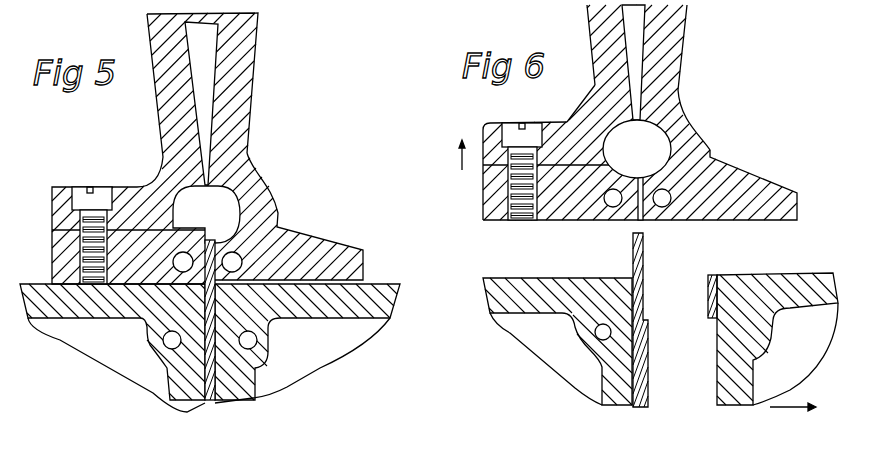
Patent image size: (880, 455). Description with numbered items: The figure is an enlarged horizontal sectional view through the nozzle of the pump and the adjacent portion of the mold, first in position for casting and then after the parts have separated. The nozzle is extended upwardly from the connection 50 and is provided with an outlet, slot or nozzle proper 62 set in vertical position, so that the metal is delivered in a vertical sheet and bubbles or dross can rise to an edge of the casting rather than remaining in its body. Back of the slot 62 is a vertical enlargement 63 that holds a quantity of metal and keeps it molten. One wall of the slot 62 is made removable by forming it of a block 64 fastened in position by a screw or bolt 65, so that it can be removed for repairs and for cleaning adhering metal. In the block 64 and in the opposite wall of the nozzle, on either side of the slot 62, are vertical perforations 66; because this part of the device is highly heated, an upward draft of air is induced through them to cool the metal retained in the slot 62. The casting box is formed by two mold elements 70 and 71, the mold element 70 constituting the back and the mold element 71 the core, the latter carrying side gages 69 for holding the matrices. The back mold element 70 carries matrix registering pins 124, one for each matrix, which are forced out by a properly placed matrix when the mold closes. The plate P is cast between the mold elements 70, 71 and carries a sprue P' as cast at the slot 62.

In FIG. 5, the connection 50 is at (251, 100).
In FIG. 6, the connection 50 is at (680, 57).
In FIG. 5, the slot 62 is at (250, 243).
In FIG. 6, the slot 62 is at (633, 222).
In FIG. 5, the vertical enlargement 63 is at (206, 214).
In FIG. 6, the vertical enlargement 63 is at (637, 149).
In FIG. 5, the block 64 is at (51, 252).
In FIG. 6, the block 64 is at (478, 202).
In FIG. 5, the screw 65 is at (82, 186).
In FIG. 6, the screw 65 is at (525, 122).
In FIG. 5, the vertical perforations 66 is at (243, 260).
In FIG. 6, the vertical perforations 66 is at (610, 207).
In FIG. 6, the side gage 69 is at (711, 274).
In FIG. 5, the mold element 70 is at (77, 347).
In FIG. 6, the mold element 70 is at (558, 377).
In FIG. 5, the mold element 71 is at (303, 373).
In FIG. 6, the mold element 71 is at (798, 377).
In FIG. 5, the matrix registering pin 124 is at (166, 350).
In FIG. 6, the matrix registering pin 124 is at (595, 333).
In FIG. 5, the plate P is at (215, 340).
In FIG. 6, the plate P is at (661, 390).
In FIG. 5, the sprue P' is at (312, 266).
In FIG. 6, the sprue P' is at (656, 320).